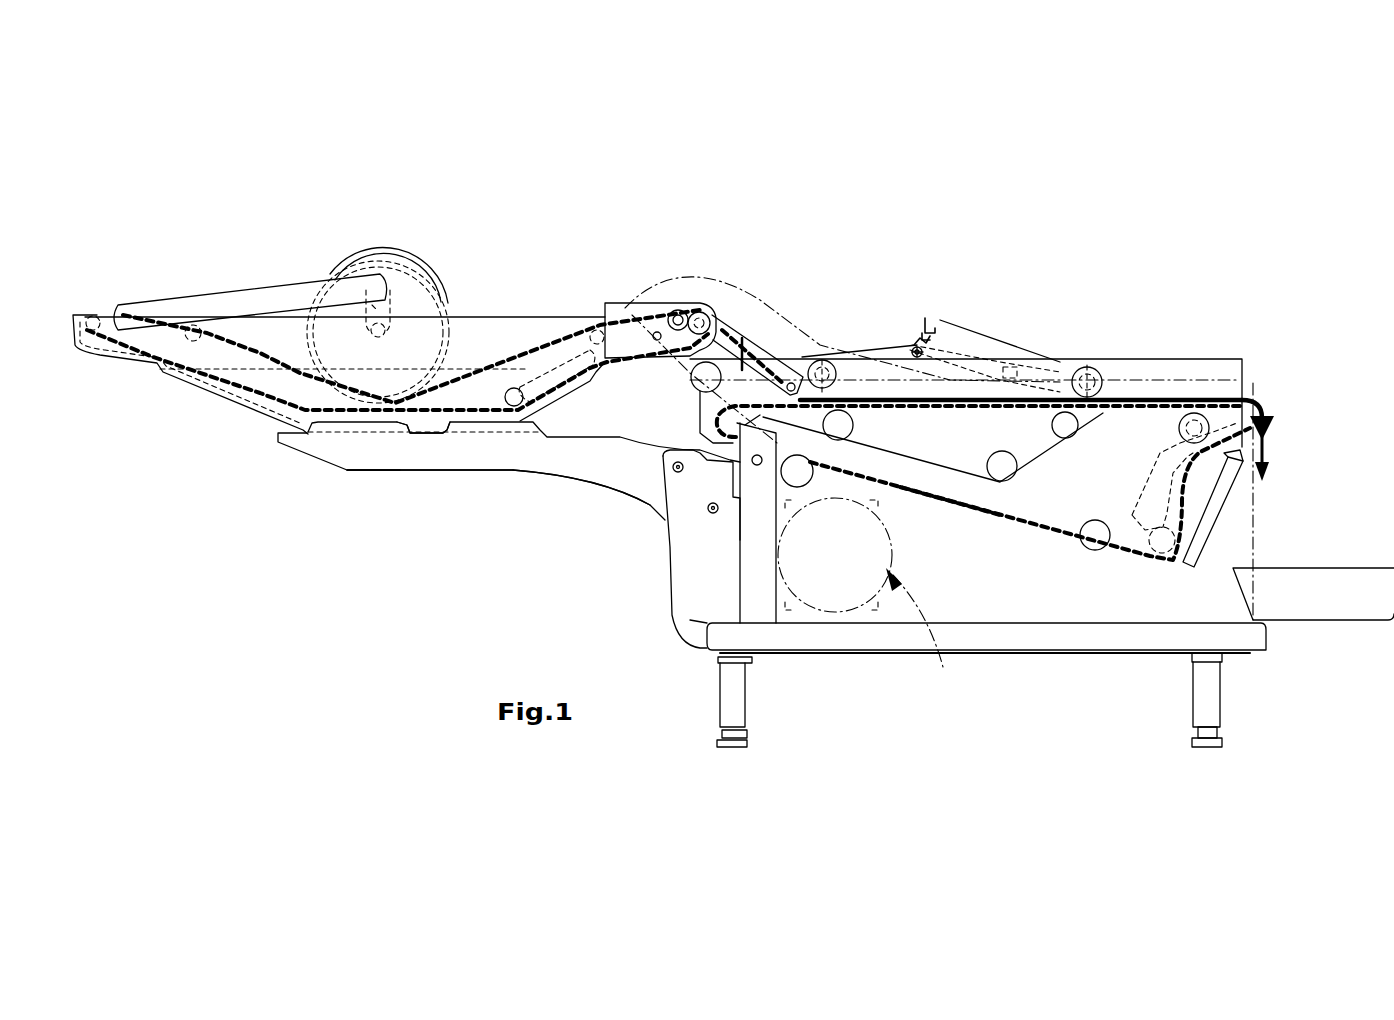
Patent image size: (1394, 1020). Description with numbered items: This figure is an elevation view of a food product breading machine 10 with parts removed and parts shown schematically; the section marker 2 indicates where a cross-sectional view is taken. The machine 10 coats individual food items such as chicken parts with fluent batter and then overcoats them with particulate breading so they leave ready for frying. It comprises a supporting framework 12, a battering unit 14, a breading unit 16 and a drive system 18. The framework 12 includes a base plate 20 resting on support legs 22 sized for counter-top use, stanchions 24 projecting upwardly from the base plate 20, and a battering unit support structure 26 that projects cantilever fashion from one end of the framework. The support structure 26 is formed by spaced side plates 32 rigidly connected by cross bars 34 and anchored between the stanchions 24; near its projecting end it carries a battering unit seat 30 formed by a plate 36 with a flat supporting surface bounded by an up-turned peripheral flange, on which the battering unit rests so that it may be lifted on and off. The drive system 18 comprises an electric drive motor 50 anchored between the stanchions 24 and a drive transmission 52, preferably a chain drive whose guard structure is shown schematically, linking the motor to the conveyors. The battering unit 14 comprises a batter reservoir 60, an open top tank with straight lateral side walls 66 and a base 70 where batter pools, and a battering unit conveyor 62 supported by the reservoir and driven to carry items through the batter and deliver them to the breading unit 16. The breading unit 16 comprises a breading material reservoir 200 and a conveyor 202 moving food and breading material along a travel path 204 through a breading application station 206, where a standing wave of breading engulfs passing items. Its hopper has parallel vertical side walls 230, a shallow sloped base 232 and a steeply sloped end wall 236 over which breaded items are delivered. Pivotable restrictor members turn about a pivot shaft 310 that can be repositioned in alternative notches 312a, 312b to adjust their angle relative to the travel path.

The food product breading machine 10 is at (1053, 268).
The supporting framework 12 is at (445, 588).
The battering unit 14 is at (212, 422).
The breading unit 16 is at (1270, 427).
The drive system 18 is at (924, 631).
The base plate 20 is at (1003, 640).
The support legs 22 is at (733, 688).
The stanchions 24 is at (757, 597).
The battering unit support structure 26 is at (589, 460).
The battering unit seat 30 is at (357, 432).
The side plates 32 is at (532, 573).
The cross bars 34 is at (710, 508).
The plate 36 is at (430, 437).
The drive motor 50 is at (847, 555).
The drive transmission 52 is at (740, 270).
The batter reservoir 60 is at (515, 305).
The battering unit conveyor 62 is at (623, 318).
The lateral side walls 66 is at (272, 330).
The base 70 is at (388, 427).
The breading material reservoir 200 is at (968, 444).
The conveyor 202 is at (1133, 405).
The travel path 204 is at (1213, 397).
The breading application station 206 is at (1068, 348).
The side walls 230 is at (1088, 498).
The base 232 is at (980, 518).
The end wall 236 is at (1210, 513).
The pivot shaft 310 is at (910, 347).
The additional notch 312a is at (912, 342).
The additional notch 312b is at (927, 318).
The section line 2 is at (97, 240).